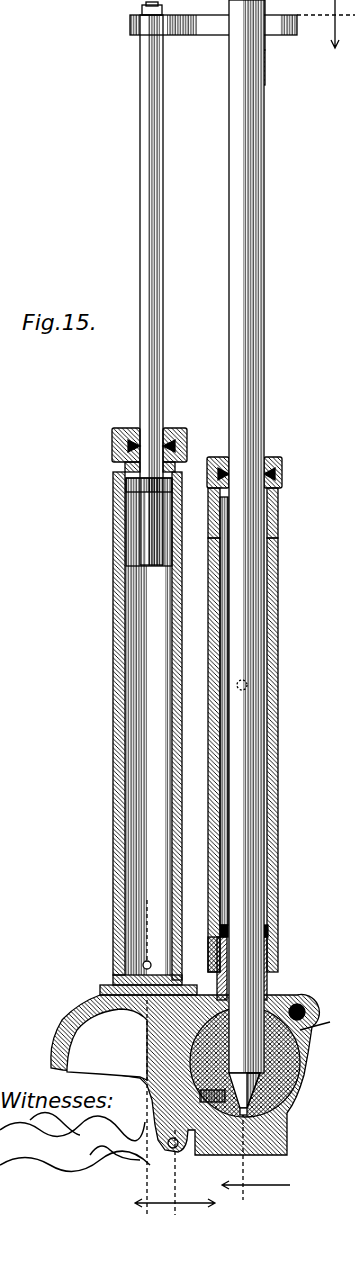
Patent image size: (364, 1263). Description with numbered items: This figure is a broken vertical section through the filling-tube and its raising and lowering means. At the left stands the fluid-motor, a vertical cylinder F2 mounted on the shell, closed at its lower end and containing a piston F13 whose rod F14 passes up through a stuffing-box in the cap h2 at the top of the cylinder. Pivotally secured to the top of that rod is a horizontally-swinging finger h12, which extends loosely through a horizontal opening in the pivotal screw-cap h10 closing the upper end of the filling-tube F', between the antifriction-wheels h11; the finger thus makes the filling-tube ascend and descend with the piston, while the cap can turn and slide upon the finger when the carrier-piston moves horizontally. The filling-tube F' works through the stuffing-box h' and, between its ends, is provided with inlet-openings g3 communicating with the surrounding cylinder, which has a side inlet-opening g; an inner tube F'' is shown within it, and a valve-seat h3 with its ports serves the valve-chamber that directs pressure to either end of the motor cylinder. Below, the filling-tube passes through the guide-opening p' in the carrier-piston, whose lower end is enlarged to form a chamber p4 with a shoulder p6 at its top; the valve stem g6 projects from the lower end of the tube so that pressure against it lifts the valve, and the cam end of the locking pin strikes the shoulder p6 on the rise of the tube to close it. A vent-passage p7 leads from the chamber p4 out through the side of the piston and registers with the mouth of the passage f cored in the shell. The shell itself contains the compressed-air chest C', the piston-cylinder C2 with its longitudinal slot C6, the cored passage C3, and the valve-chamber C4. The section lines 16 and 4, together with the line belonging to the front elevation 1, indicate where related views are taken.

The horizontally-swinging finger h12 is at (197, 35).
The antifriction-wheels h11 is at (250, 25).
The pivotal screw-cap h10 is at (265, 50).
The front elevation of the improved apparatus 1 is at (330, 24).
The piston rod F14 is at (140, 181).
The cylinder cap h2 is at (115, 428).
The piston F13 is at (149, 522).
The vertical tube or cylinder F2 is at (130, 527).
The inlet-openings g3 is at (215, 497).
The stuffing-box h' is at (261, 467).
The filling-tube F' is at (261, 748).
The inner rod F'' is at (271, 557).
The inlet-opening g is at (247, 683).
The valve-seat h3 is at (268, 930).
The vent-passage p7 is at (195, 1165).
The longitudinally-extending slot C6 is at (282, 985).
The valve-chamber C4 is at (310, 1005).
The vertical guide-opening p' is at (323, 1032).
The compressed-air chest C' is at (179, 1074).
The shoulder p6 is at (300, 1070).
The piston-cylinder C2 is at (290, 1096).
The chamber p4 is at (262, 1112).
The passage C3 is at (287, 1150).
The passage f is at (176, 1148).
The valve stem g6 is at (240, 1110).
The section line 16 is at (175, 1111).
The section line 4 is at (256, 1166).